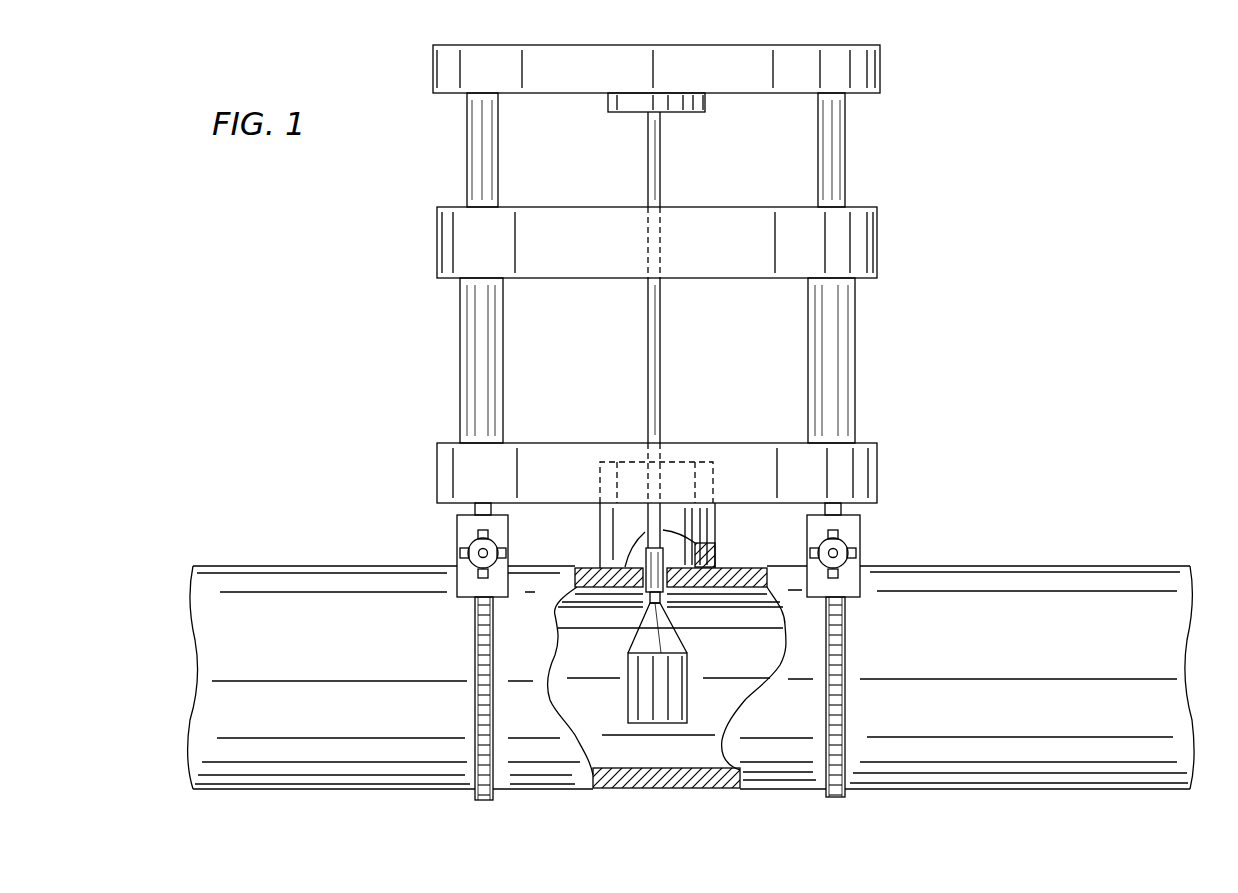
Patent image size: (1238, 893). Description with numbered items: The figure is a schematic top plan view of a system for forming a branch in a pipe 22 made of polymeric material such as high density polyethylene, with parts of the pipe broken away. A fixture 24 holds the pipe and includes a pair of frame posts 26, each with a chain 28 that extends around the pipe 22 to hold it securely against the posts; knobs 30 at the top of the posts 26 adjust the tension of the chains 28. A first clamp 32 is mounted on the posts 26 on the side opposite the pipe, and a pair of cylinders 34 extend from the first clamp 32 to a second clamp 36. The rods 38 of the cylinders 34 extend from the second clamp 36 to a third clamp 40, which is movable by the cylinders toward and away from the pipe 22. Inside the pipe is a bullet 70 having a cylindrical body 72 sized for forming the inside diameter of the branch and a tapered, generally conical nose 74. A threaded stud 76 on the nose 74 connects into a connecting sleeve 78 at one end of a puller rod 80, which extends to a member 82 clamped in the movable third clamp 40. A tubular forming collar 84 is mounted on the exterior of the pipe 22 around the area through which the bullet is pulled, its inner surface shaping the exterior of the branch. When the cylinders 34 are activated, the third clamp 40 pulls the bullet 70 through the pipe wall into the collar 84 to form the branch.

The pipe 22 is at (1138, 567).
The fixture 24 is at (940, 410).
The frame posts 26 is at (470, 527).
The chain 28 is at (475, 627).
The knobs 30 is at (472, 545).
The first clamp 32 is at (805, 463).
The cylinders 34 is at (460, 337).
The second clamp 36 is at (848, 237).
The rods 38 is at (467, 155).
The third clamp 40 is at (805, 57).
The bullet 70 is at (640, 723).
The cylindrical body 72 is at (673, 697).
The conical nose 74 is at (650, 633).
The threaded stud 76 is at (600, 560).
The connecting sleeve 78 is at (712, 553).
The puller rod 80 is at (660, 350).
The member 82 is at (670, 105).
The forming collar 84 is at (600, 520).